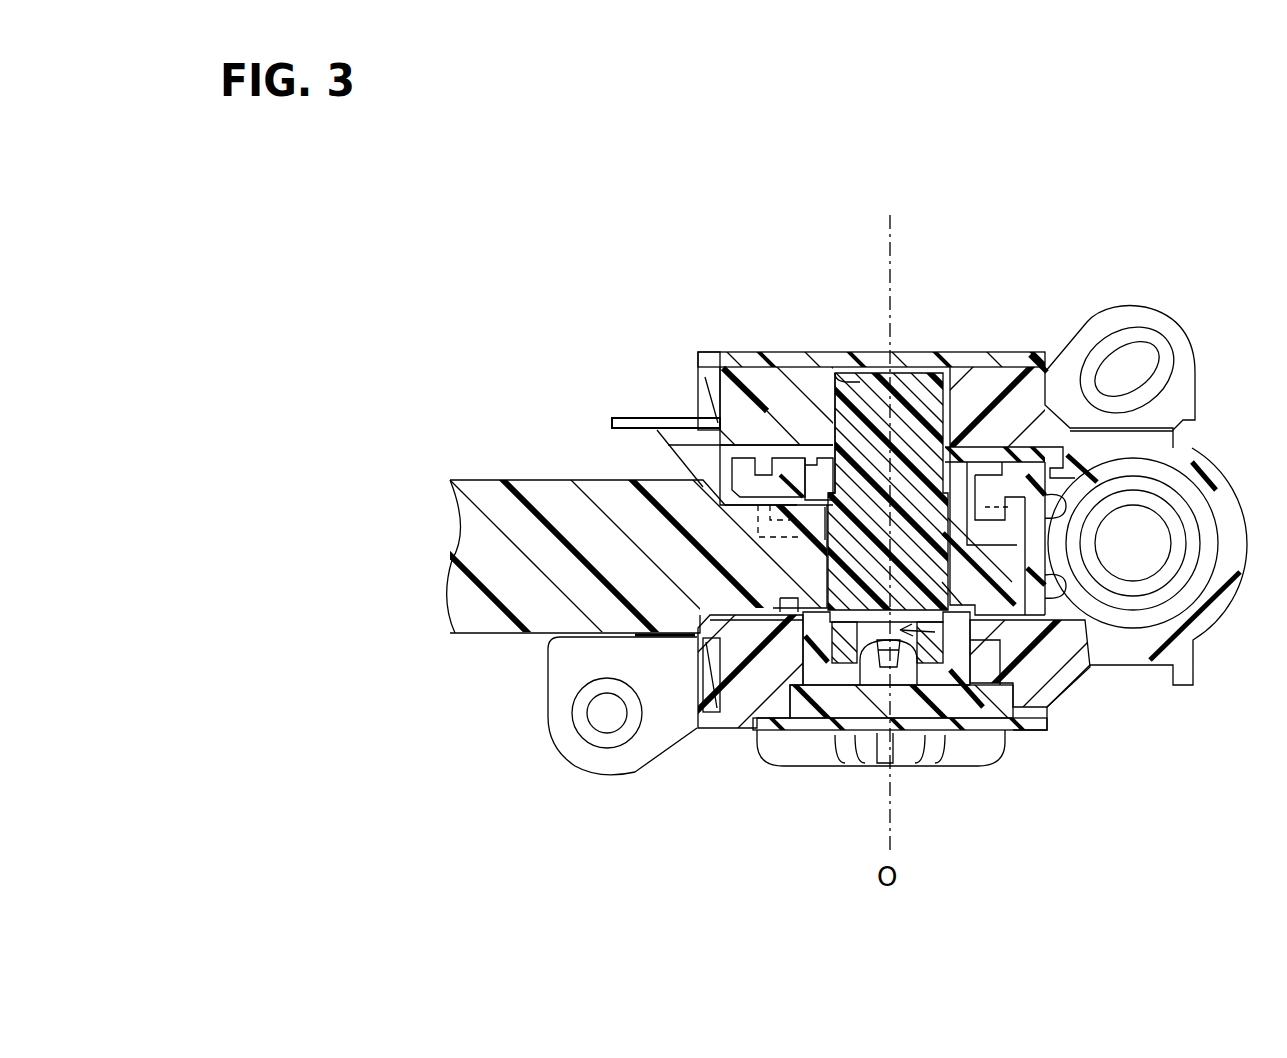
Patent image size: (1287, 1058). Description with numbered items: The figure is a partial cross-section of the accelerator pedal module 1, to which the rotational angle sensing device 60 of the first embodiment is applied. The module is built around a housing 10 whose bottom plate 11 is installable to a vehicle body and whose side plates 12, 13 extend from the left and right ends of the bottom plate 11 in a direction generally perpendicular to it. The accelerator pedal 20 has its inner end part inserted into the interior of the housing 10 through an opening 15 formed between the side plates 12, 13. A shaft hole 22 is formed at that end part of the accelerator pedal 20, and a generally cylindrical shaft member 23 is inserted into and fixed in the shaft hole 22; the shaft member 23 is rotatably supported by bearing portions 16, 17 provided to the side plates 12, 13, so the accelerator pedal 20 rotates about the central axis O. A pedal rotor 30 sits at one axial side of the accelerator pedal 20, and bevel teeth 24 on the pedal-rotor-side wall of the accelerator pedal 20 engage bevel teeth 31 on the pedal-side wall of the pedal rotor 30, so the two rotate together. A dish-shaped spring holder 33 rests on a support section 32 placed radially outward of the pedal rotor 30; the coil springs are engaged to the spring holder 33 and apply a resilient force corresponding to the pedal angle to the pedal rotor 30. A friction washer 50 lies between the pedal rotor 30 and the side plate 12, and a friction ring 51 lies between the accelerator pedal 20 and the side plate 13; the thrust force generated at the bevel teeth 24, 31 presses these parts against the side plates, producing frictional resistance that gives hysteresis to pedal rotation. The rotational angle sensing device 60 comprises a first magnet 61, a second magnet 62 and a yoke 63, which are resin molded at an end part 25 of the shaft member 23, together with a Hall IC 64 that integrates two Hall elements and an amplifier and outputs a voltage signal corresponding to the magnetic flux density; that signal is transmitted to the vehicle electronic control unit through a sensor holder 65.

The accelerator pedal module 1 is at (1203, 243).
The housing 10 is at (1180, 652).
The bottom plate 11 is at (1168, 400).
The side plate 12 is at (735, 363).
The side plate 13 is at (742, 710).
The opening 15 is at (690, 478).
The bearing portion 16 is at (858, 395).
The bearing portion 17 is at (950, 690).
The accelerator pedal 20 is at (515, 530).
The shaft hole 22 is at (1015, 625).
The shaft member 23 is at (905, 428).
The bevel teeth 24 is at (1020, 515).
The end part 25 is at (790, 667).
The pedal rotor 30 is at (787, 448).
The bevel teeth 31 is at (990, 510).
The support section 32 is at (1055, 565).
The spring holder 33 is at (1125, 525).
The friction washer 50 is at (762, 400).
The friction ring 51 is at (717, 707).
The rotational angle sensing device 60 is at (1040, 622).
The first magnet 61 is at (828, 662).
The second magnet 62 is at (905, 660).
The yoke 63 is at (975, 640).
The Hall IC 64 is at (848, 660).
The sensor holder 65 is at (955, 668).